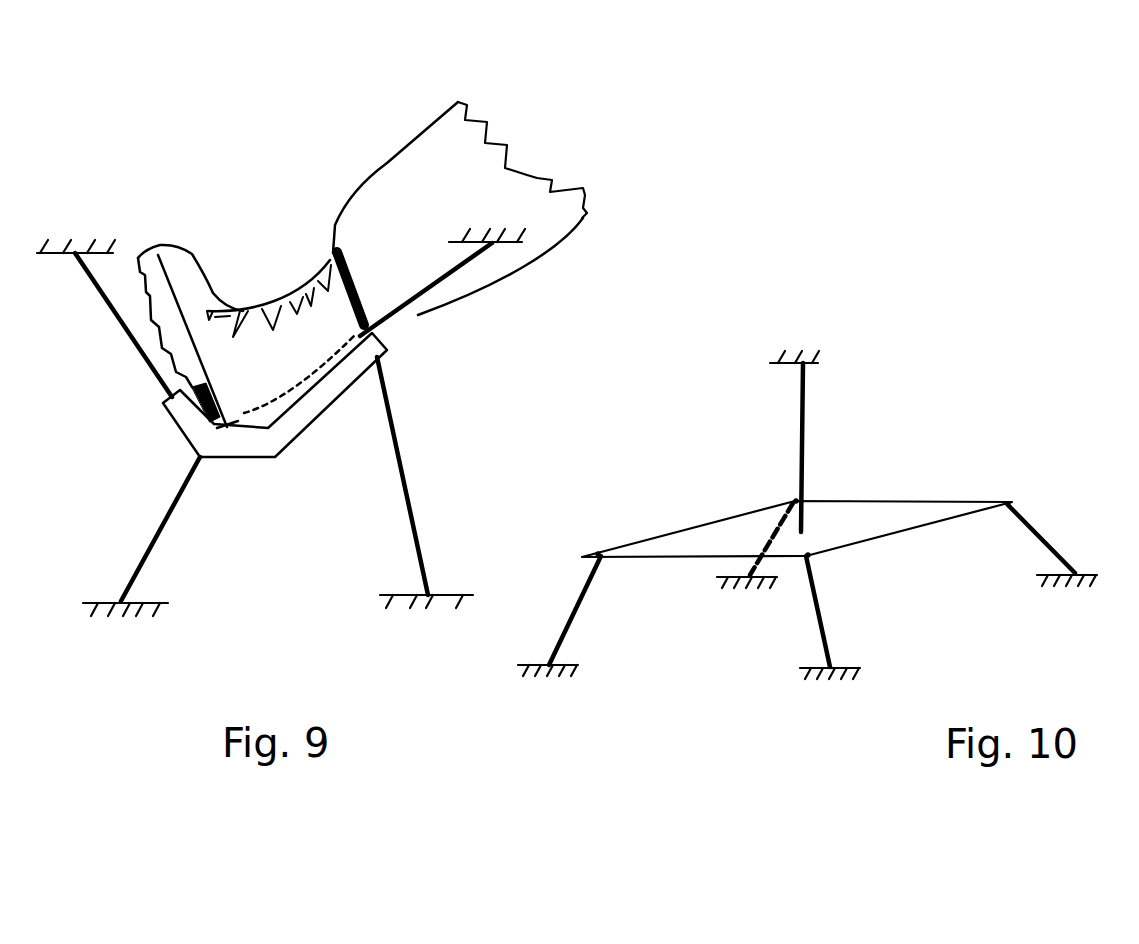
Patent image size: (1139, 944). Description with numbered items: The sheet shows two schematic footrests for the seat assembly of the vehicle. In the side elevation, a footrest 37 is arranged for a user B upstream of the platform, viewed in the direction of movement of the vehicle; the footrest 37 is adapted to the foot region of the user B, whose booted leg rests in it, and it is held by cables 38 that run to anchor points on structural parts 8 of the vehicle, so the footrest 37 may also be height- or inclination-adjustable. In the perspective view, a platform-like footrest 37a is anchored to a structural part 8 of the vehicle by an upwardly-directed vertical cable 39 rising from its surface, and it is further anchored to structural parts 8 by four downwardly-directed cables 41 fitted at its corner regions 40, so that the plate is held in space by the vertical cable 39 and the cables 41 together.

In FIG. 9, the structural part 8 is at (73, 252).
In FIG. 10, the structural part 8 is at (798, 362).
In FIG. 9, the footrest 37 is at (273, 460).
In FIG. 10, the platform-like footrest 37a is at (884, 502).
In FIG. 9, the cable 38 is at (163, 510).
In FIG. 10, the vertical cable 39 is at (800, 400).
In FIG. 10, the corner region 40 is at (600, 553).
In FIG. 10, the cable 41 is at (765, 530).
In FIG. 9, the user B is at (385, 163).